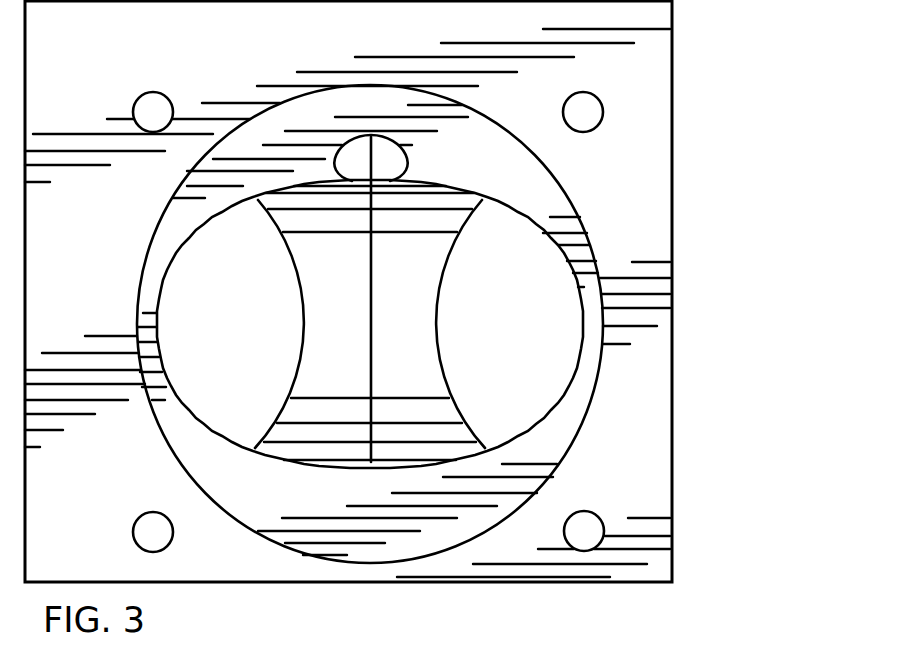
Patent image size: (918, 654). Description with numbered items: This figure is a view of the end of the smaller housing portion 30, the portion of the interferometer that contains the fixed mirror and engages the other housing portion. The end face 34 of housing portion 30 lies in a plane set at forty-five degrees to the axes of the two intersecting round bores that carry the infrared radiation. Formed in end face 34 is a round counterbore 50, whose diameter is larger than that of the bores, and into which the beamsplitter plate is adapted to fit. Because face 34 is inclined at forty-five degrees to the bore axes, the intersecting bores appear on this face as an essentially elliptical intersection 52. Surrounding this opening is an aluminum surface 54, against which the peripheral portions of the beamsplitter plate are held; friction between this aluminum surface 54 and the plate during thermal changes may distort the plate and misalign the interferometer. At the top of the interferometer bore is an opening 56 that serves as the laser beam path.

The smaller housing portion 30 is at (696, 190).
The end face 34 is at (645, 147).
The round counterbore 50 is at (247, 528).
The elliptical intersection 52 is at (185, 226).
The aluminum surface 54 is at (477, 163).
The opening 56 is at (384, 157).